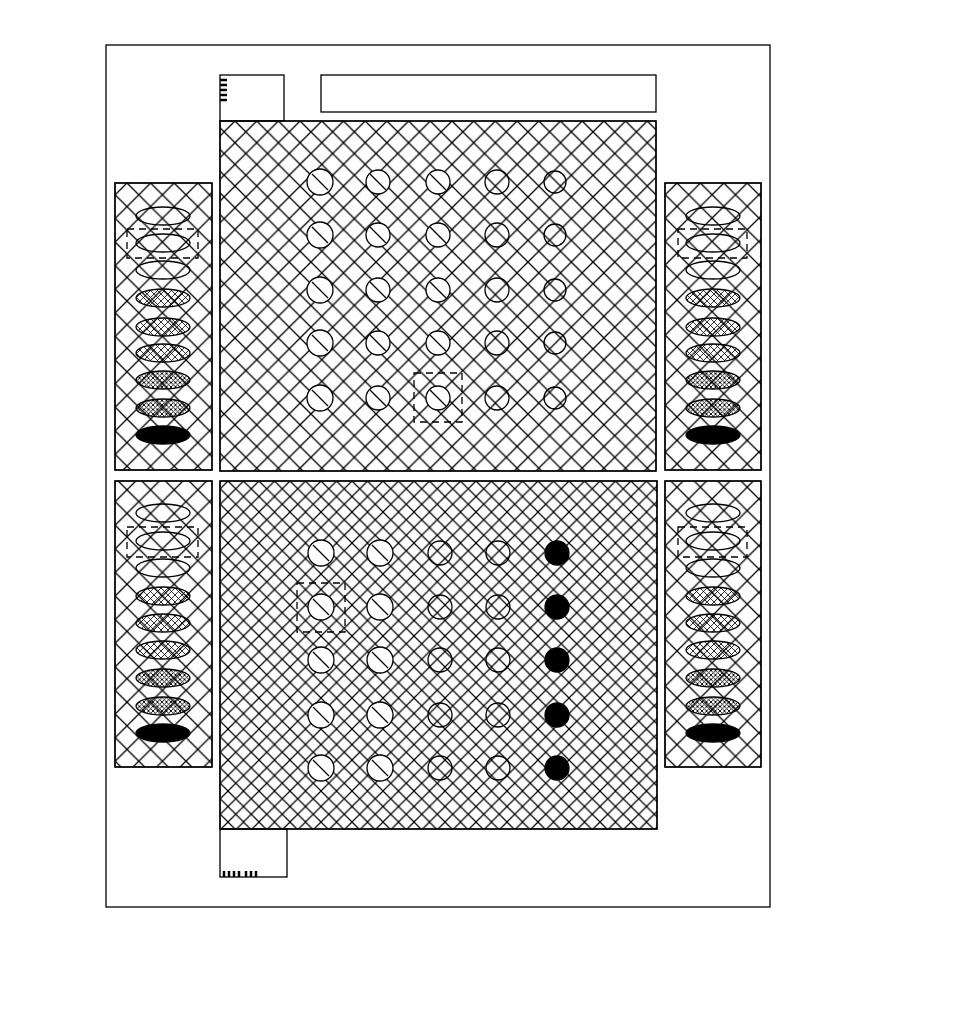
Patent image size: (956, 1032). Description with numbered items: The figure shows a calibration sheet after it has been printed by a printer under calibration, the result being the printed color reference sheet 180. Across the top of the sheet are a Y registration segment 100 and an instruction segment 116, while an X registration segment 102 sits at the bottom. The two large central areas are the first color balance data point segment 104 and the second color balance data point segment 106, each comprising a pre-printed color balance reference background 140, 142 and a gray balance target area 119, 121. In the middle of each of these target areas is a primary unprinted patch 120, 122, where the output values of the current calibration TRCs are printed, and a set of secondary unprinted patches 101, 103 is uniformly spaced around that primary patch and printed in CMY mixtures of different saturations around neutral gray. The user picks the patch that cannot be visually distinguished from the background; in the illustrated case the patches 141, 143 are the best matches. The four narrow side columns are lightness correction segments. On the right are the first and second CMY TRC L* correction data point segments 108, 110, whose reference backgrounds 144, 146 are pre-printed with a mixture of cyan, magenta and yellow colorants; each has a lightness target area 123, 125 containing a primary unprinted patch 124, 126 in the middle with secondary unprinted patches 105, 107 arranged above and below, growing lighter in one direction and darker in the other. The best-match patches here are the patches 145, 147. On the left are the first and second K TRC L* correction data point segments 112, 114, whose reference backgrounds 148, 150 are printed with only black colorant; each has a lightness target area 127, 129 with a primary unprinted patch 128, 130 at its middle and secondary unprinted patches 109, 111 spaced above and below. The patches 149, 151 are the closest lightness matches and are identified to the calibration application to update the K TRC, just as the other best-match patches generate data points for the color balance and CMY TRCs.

The printed color reference sheet 180 is at (437, 44).
The Y registration segment 100 is at (284, 92).
The X registration segment 102 is at (220, 853).
The instruction segment 116 is at (508, 103).
The first color balance data point segment 104 is at (657, 130).
The second color balance data point segment 106 is at (608, 830).
The gray balance target area 119 is at (278, 180).
The gray balance target area 121 is at (278, 783).
The color balance reference background 140 is at (636, 163).
The color balance reference background 142 is at (636, 785).
The primary unprinted patch 120 is at (442, 280).
The primary unprinted patch 122 is at (443, 650).
The secondary unprinted patches 101 is at (490, 226).
The secondary unprinted patches 103 is at (443, 596).
The best-match patch 141 is at (418, 424).
The best-match patch 143 is at (297, 580).
The first K TRC L* correction data point segment 112 is at (116, 186).
The second K TRC L* correction data point segment 114 is at (118, 768).
The first CMY TRC L* correction data point segment 108 is at (762, 186).
The second CMY TRC L* correction data point segment 110 is at (758, 768).
The lightness target area 127 is at (163, 192).
The lightness target area 129 is at (163, 748).
The lightness target area 123 is at (709, 196).
The lightness target area 125 is at (713, 748).
The reference background 148 is at (133, 462).
The reference background 150 is at (128, 500).
The reference background 144 is at (744, 452).
The reference background 146 is at (740, 492).
The best-match patch 149 is at (127, 232).
The best-match patch 151 is at (127, 530).
The best-match patch 145 is at (749, 230).
The best-match patch 147 is at (748, 532).
The secondary unprinted patches 109 is at (138, 298).
The secondary unprinted patches 111 is at (138, 596).
The secondary unprinted patches 105 is at (740, 298).
The secondary unprinted patches 107 is at (740, 569).
The primary unprinted patch 128 is at (136, 327).
The primary unprinted patch 130 is at (138, 623).
The primary unprinted patch 124 is at (740, 327).
The primary unprinted patch 126 is at (740, 624).